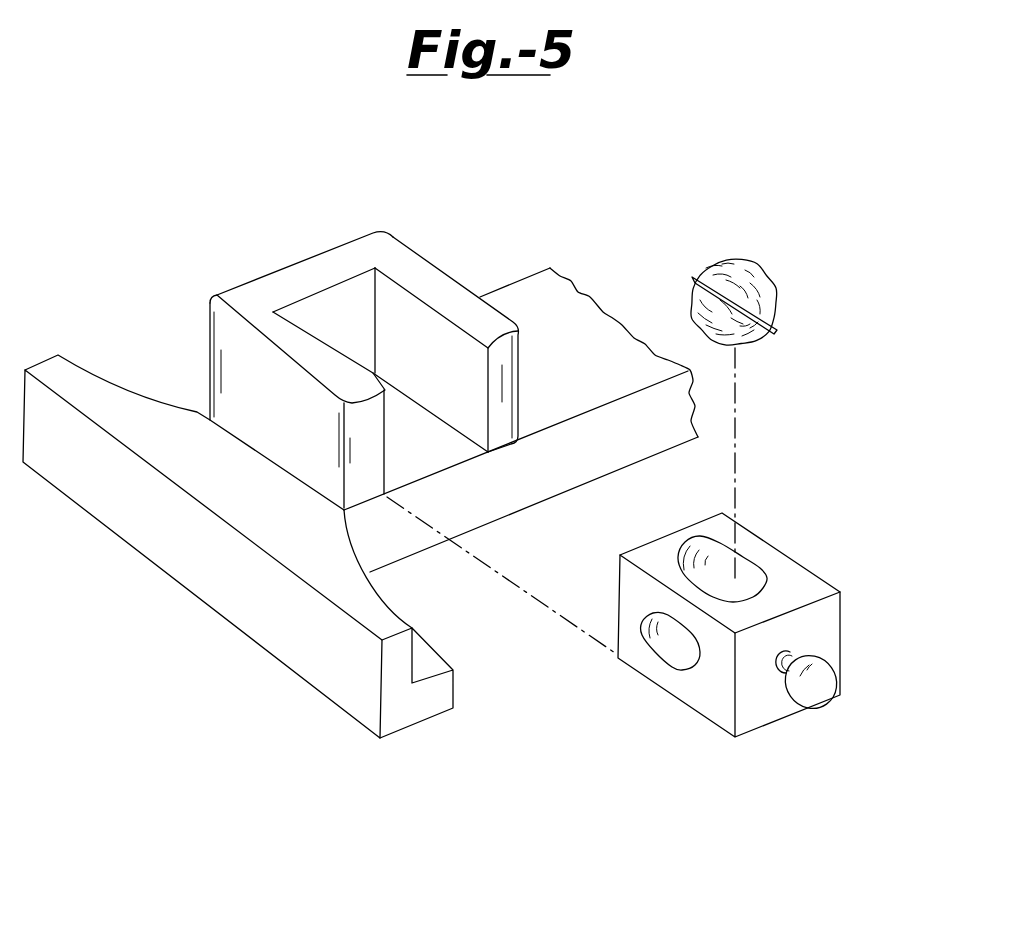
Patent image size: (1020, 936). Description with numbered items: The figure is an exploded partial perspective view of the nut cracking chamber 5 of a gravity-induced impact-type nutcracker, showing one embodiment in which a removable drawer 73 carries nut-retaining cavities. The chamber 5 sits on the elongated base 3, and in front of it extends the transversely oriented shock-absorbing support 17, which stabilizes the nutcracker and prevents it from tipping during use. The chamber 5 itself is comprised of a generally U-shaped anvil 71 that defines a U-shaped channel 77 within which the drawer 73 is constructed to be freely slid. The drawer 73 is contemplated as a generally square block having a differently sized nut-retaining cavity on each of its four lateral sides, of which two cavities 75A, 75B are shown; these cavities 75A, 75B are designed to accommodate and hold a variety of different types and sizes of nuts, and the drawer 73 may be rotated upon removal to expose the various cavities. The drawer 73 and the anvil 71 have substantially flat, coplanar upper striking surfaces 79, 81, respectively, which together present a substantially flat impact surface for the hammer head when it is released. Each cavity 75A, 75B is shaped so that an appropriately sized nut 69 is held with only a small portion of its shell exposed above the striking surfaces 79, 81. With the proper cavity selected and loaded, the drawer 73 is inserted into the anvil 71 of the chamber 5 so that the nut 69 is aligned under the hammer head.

The base 3 is at (573, 300).
The nut cracking chamber 5 is at (352, 352).
The shock-absorbing support 17 is at (207, 578).
The nut 69 is at (767, 278).
The U-shaped anvil 71 is at (210, 343).
The removable drawer 73 is at (753, 626).
The nut-retaining cavity 75A is at (760, 567).
The nut-retaining cavity 75B is at (672, 653).
The U-shaped channel 77 is at (437, 440).
The upper striking surface 79 is at (808, 585).
The upper striking surface 81 is at (323, 267).